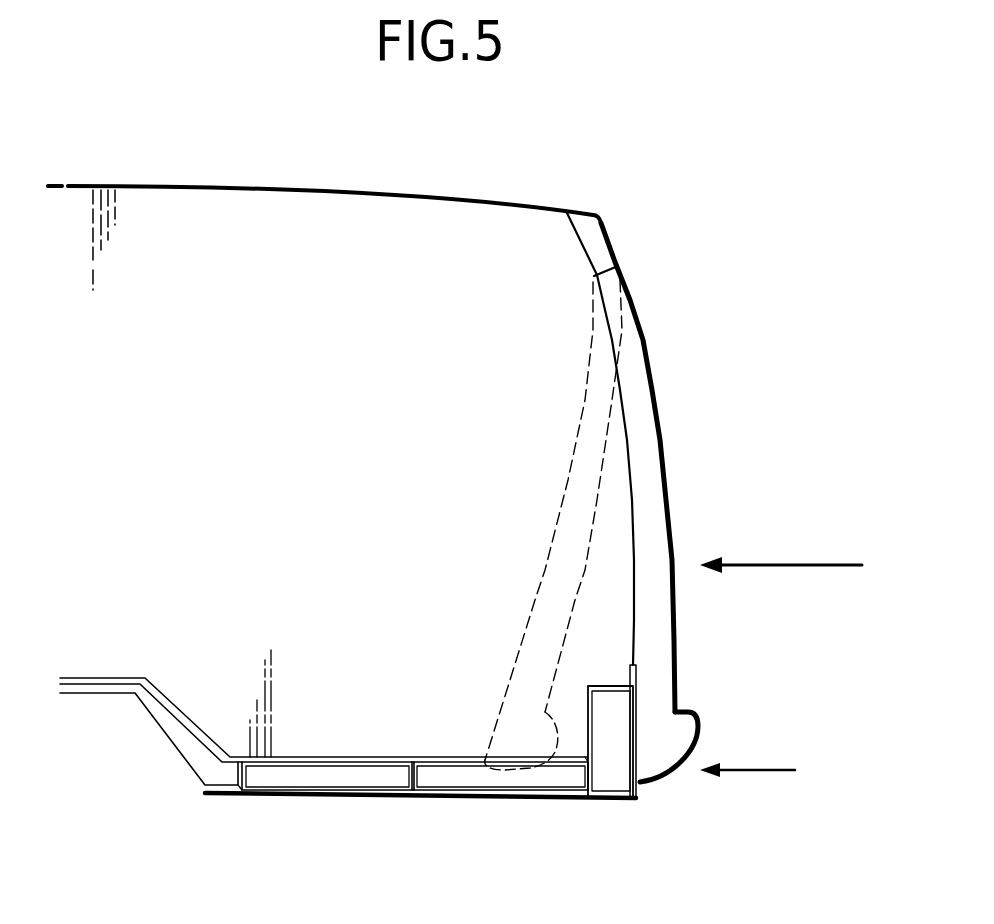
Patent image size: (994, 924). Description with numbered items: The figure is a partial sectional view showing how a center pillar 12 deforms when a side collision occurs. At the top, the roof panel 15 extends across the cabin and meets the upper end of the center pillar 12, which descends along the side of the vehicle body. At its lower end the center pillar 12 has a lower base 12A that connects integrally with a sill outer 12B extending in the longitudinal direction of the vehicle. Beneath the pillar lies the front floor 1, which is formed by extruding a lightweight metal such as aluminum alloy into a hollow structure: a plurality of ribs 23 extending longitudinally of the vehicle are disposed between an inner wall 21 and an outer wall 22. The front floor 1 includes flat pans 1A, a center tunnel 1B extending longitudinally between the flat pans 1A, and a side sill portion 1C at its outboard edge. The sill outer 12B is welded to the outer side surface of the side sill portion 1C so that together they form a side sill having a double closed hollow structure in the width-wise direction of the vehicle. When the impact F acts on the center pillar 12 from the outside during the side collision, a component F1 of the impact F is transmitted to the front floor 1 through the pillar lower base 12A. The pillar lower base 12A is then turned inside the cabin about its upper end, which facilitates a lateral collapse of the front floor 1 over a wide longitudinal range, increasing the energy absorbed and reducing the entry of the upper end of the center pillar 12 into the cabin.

The roof panel 15 is at (330, 191).
The center pillar 12 is at (660, 418).
The lower base 12A is at (500, 710).
The sill outer 12B is at (700, 726).
The front floor 1 is at (297, 730).
The flat pan 1A is at (357, 745).
The center tunnel 1B is at (145, 665).
The side sill portion 1C is at (643, 752).
The inner wall 21 is at (437, 757).
The outer wall 22 is at (310, 800).
The rib 23 is at (250, 775).
The impact F is at (781, 549).
The component of the impact F1 is at (747, 756).